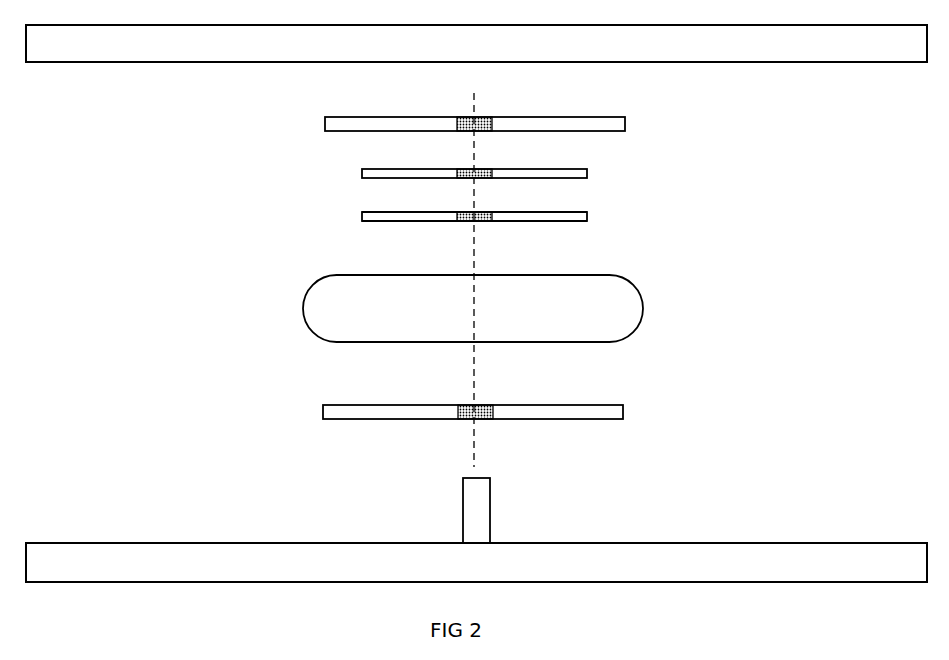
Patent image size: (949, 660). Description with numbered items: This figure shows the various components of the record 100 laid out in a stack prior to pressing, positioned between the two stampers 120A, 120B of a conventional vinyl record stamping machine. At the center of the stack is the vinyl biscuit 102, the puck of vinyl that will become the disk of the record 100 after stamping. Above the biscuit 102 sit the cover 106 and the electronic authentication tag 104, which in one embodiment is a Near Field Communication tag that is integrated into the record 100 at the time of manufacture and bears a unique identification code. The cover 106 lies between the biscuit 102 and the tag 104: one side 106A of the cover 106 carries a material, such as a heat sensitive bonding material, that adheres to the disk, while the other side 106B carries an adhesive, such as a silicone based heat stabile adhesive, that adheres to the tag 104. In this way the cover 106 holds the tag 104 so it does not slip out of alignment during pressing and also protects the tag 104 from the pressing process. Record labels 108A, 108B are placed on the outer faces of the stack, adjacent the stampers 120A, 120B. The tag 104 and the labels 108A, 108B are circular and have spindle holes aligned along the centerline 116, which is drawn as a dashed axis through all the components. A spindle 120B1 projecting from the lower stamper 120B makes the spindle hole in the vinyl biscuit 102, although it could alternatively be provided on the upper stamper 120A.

The record 100 is at (110, 125).
The vinyl biscuit 102 is at (302, 306).
The electronic authentication tag 104 is at (590, 172).
The cover 106 is at (355, 216).
The one side of the cover 106A is at (372, 224).
The other side of the cover 106B is at (372, 209).
The record label 108A is at (575, 116).
The record label 108B is at (556, 421).
The centerline 116 is at (470, 103).
The stamper 120A is at (506, 55).
The stamper 120B is at (506, 573).
The spindle 120B1 is at (493, 512).